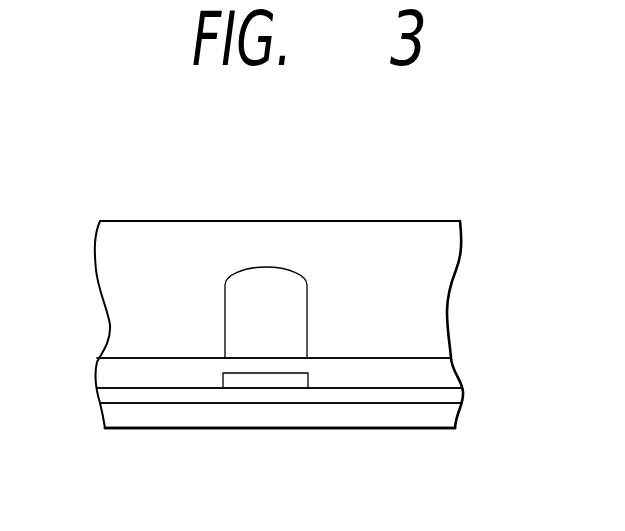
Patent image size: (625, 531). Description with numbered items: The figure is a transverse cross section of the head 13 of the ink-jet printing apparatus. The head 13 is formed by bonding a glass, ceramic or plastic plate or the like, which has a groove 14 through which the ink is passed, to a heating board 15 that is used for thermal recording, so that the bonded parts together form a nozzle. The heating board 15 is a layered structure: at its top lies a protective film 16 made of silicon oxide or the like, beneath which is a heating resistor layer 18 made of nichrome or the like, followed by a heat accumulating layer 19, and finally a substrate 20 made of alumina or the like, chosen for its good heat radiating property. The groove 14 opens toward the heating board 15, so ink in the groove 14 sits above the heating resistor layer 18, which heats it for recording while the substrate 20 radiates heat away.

The semiconductor substrate body 13 is at (152, 221).
The bump electrode 14 is at (263, 267).
The multilayer wiring structure 15 is at (484, 353).
The insulating layer 16 is at (365, 367).
The wiring pad 18 is at (308, 380).
The intermediate layer 19 is at (418, 398).
The bottom layer 20 is at (372, 414).